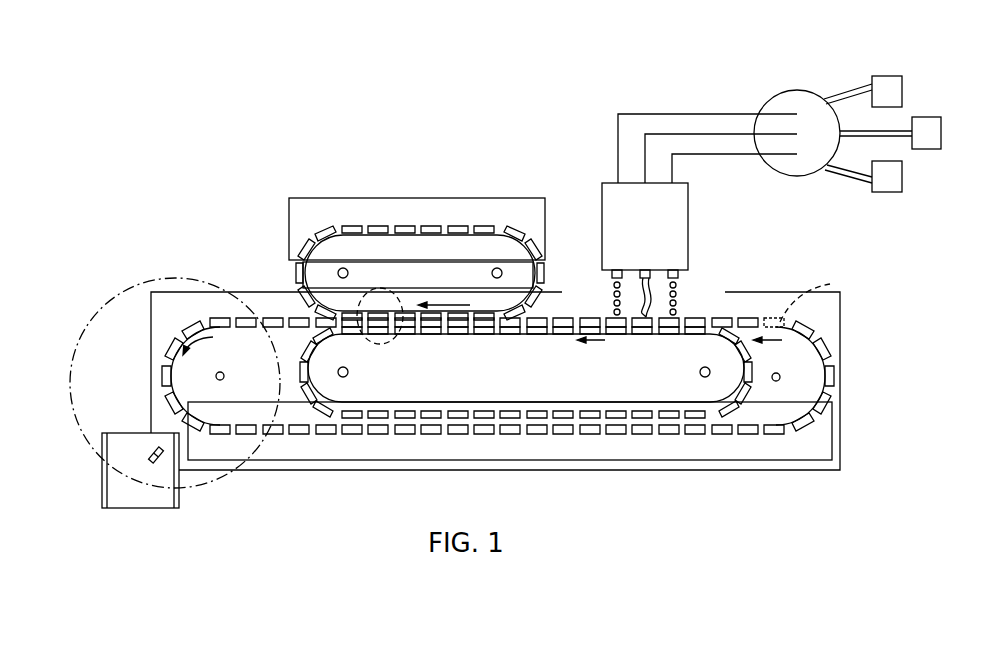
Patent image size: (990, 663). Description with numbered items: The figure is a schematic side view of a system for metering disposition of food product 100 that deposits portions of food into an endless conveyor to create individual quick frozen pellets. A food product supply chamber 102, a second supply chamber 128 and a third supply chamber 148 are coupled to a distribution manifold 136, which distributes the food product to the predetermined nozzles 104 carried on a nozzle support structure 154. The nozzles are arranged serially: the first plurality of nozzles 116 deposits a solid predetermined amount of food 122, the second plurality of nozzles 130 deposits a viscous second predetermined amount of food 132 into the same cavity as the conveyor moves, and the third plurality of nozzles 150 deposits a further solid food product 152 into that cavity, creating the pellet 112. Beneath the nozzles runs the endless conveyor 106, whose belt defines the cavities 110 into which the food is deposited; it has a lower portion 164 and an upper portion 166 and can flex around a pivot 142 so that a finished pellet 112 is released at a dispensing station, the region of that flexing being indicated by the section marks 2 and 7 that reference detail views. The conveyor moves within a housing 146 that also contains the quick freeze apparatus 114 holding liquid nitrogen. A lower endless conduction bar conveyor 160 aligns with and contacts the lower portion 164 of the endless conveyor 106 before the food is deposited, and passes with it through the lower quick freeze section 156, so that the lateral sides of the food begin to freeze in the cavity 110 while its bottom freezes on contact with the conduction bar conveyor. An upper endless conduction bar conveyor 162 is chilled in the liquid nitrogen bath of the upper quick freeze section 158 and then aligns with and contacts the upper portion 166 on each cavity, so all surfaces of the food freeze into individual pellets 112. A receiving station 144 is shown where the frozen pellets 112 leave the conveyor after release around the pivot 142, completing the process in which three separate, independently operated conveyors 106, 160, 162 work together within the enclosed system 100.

The system for metering disposition of food product 100 is at (272, 186).
The food product supply chamber 102 is at (888, 75).
The nozzles 104 is at (605, 295).
The conveyor 106 is at (808, 322).
The cavities 110 is at (840, 291).
The pellet 112 is at (150, 453).
The quick freeze apparatus 114 is at (390, 213).
The first plurality of nozzles 116 is at (675, 265).
The predetermined amount of food 122 is at (682, 293).
The second supply chamber 128 is at (942, 130).
The second plurality of nozzles 130 is at (645, 264).
The second predetermined amount of food 132 is at (631, 284).
The distribution manifold 136 is at (797, 90).
The pivot 142 is at (226, 376).
The bin 144 is at (158, 447).
The housing 146 is at (246, 291).
The third supply chamber 148 is at (902, 175).
The third plurality of nozzles 150 is at (617, 268).
The food product 152 is at (541, 278).
The nozzle support structure 154 is at (602, 188).
The lower quick freeze section 156 is at (550, 428).
The upper quick freeze section 158 is at (452, 205).
The lower endless conduction bar conveyor 160 is at (352, 410).
The upper endless conduction bar conveyor 162 is at (313, 245).
The lower portion 164 is at (814, 349).
The upper portion 166 is at (752, 322).
The section line 2 is at (162, 279).
The section line 7 is at (369, 302).